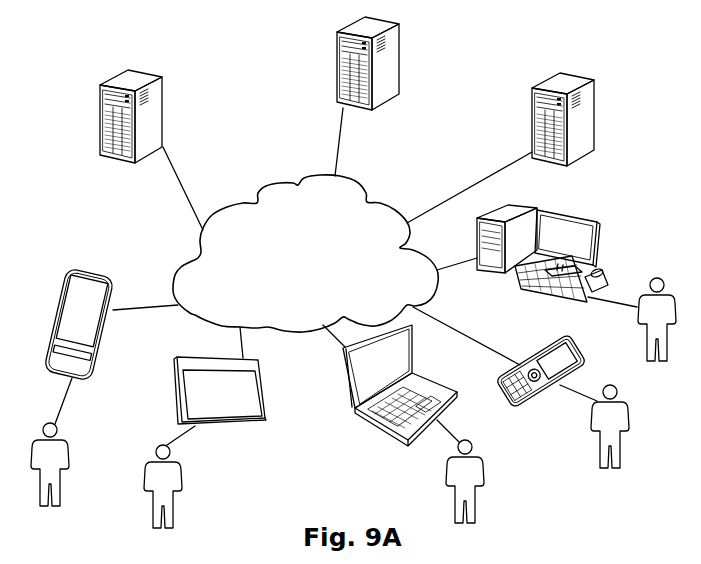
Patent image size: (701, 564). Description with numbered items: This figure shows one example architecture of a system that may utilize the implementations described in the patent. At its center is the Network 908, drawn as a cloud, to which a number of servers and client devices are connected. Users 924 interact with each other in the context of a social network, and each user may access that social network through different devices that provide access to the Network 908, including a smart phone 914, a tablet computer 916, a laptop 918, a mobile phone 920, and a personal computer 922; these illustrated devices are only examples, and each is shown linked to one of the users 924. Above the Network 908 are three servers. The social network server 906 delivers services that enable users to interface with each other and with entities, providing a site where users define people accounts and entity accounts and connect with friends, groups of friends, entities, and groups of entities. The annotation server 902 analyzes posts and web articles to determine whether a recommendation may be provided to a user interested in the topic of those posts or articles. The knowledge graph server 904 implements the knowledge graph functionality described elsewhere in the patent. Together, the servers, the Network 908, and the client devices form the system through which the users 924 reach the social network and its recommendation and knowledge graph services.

The annotation server 902 is at (108, 143).
The knowledge graph server 904 is at (587, 133).
The social network server 906 is at (345, 85).
The Network 908 is at (195, 270).
The smart phone 914 is at (72, 297).
The tablet computer 916 is at (197, 392).
The laptop 918 is at (392, 367).
The mobile phone 920 is at (560, 353).
The personal computer 922 is at (597, 233).
The users 924 is at (60, 457).